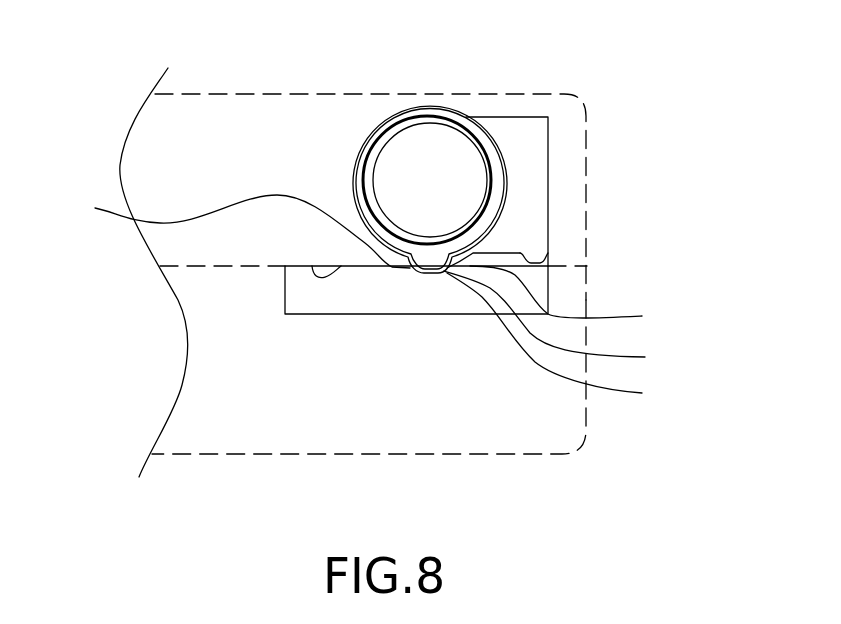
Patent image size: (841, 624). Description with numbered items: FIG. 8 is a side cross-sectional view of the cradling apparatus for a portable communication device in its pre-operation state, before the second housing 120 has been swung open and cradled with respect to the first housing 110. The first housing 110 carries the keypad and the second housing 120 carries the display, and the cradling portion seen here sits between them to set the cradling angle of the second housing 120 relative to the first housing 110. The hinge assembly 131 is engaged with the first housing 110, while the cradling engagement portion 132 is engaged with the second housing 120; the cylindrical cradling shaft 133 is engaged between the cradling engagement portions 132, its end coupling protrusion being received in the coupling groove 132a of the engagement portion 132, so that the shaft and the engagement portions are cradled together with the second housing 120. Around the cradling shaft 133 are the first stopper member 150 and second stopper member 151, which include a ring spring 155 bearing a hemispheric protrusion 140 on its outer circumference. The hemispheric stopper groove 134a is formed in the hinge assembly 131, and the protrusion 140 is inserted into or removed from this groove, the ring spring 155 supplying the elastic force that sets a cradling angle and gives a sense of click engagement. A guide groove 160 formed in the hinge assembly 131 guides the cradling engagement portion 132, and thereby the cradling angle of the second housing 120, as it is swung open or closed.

The first housing 110 is at (493, 405).
The second housing 120 is at (565, 133).
The hinge assembly 131 is at (402, 302).
The cradling engagement portion 132 is at (515, 137).
The coupling groove 132a is at (538, 257).
The cradling shaft 133 is at (427, 133).
The stopper groove 134a is at (567, 340).
The protrusion 140 is at (368, 283).
The first stopper member 150 is at (500, 187).
The second stopper member 151 is at (362, 145).
The ring spring 155 is at (573, 297).
The guide groove 160 is at (314, 276).